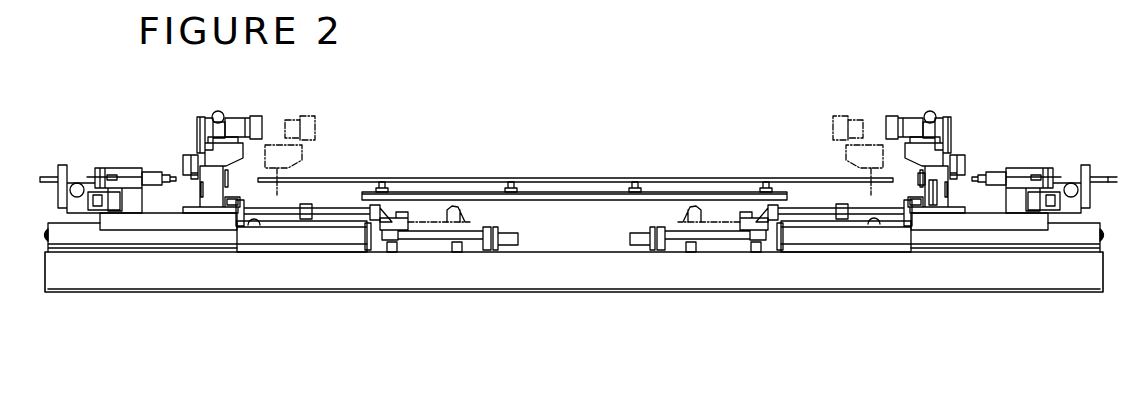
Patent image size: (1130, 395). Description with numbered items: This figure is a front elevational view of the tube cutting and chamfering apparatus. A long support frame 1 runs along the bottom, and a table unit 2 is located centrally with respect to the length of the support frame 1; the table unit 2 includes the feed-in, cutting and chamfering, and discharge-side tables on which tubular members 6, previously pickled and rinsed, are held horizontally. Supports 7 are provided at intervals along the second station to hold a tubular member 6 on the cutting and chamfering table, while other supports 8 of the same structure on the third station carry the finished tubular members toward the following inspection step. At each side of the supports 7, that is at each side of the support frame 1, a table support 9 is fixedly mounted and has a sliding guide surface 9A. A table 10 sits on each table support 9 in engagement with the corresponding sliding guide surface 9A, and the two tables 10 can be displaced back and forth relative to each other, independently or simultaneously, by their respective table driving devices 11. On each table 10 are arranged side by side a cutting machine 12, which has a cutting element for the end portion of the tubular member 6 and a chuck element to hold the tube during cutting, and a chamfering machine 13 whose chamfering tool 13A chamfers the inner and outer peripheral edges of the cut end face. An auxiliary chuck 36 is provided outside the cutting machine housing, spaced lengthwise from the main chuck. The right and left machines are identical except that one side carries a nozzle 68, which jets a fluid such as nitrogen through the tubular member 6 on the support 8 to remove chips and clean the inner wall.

The support frame 1 is at (612, 268).
The table unit 2 is at (568, 203).
The tubular member 6 is at (604, 177).
The support 7 is at (638, 177).
The support 8 is at (766, 187).
The table support 9 is at (918, 242).
The sliding guide surface 9A is at (872, 226).
The table 10 is at (987, 231).
The table driving device 11 is at (713, 242).
The cutting machine 12 is at (290, 114).
The chamfering machine 13 is at (109, 166).
The chamfering tool 13A is at (175, 173).
The auxiliary chuck 36 is at (193, 179).
The nozzle 68 is at (936, 178).